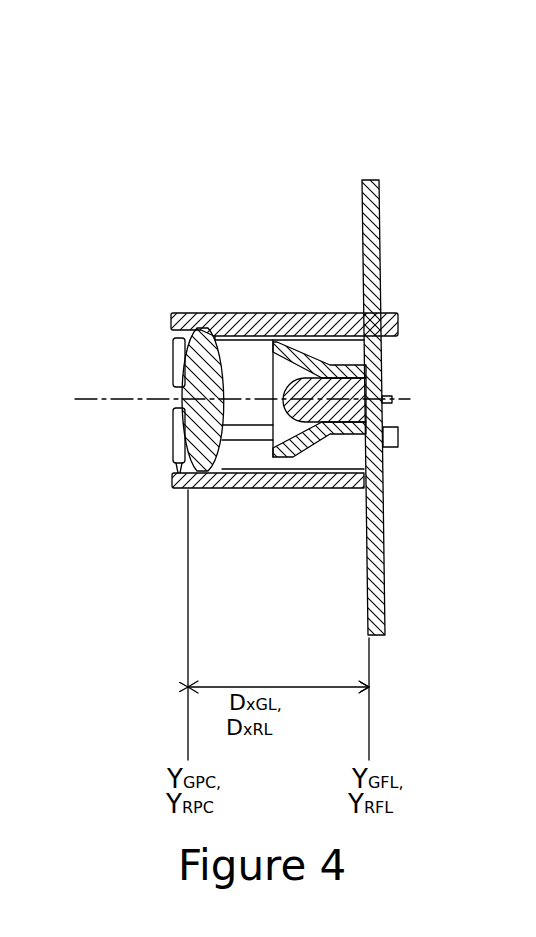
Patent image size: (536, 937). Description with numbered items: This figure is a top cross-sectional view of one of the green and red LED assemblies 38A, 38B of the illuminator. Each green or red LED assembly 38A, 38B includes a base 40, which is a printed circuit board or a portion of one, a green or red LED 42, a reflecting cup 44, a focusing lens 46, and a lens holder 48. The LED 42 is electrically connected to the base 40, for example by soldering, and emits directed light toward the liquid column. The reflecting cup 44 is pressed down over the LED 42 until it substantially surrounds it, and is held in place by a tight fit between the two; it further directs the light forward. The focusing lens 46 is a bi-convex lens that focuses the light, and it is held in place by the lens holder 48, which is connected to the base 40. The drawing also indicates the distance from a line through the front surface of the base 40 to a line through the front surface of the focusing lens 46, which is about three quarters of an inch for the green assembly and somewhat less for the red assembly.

The green LED assembly 38A is at (266, 253).
The red LED assembly 38B is at (266, 253).
The base 40 is at (381, 245).
The LED 42 is at (366, 410).
The reflecting cup 44 is at (326, 354).
The focusing lens 46 is at (184, 393).
The lens holder 48 is at (257, 313).